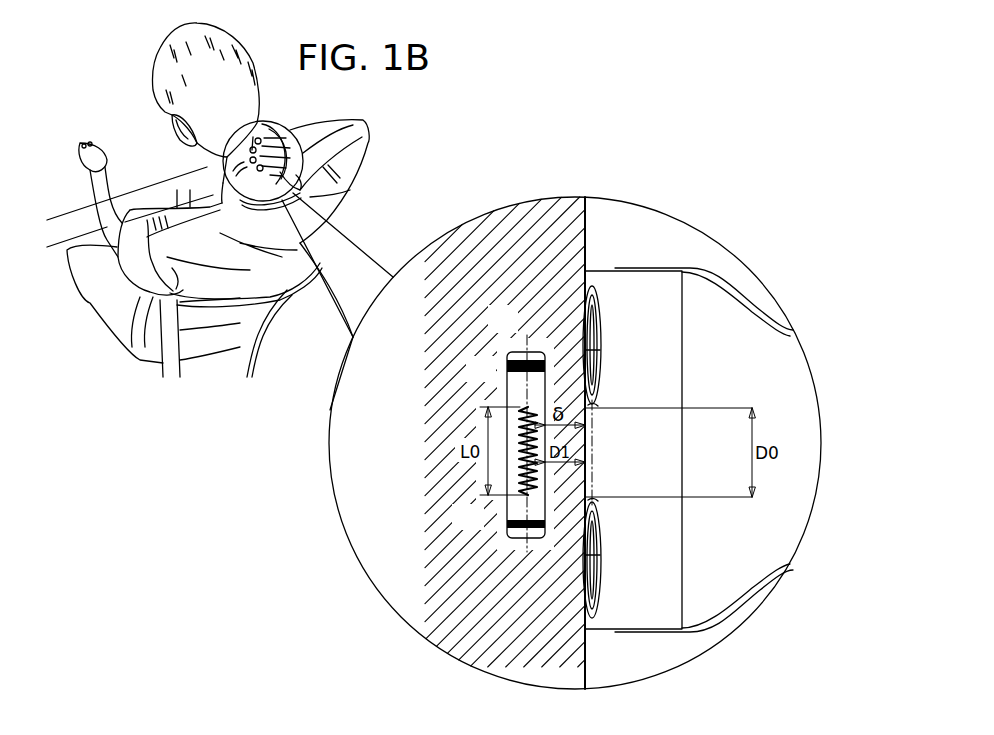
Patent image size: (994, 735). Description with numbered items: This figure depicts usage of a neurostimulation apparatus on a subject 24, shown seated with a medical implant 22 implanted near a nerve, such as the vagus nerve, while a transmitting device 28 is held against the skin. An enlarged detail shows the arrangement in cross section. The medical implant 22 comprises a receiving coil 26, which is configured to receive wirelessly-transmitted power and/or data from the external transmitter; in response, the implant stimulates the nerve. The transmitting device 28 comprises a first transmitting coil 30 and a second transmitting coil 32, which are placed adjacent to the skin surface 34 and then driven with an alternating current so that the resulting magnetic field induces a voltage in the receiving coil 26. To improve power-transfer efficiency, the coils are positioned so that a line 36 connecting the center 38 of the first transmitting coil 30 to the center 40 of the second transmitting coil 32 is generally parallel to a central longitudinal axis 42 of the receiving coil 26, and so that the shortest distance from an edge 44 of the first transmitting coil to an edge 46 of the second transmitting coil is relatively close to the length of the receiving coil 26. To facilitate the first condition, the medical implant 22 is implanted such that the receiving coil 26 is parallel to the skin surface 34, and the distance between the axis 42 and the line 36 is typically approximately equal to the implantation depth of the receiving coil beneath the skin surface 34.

The medical implant 22 is at (213, 182).
The subject 24 is at (240, 45).
The receiving coil 26 is at (527, 494).
The transmitting device 28 is at (263, 125).
The first transmitting coil 30 is at (598, 300).
The second transmitting coil 32 is at (598, 615).
The skin surface 34 is at (587, 215).
The line 36 is at (596, 447).
The center 38 is at (594, 350).
The center 40 is at (594, 555).
The central longitudinal axis 42 is at (527, 352).
The edge 44 is at (596, 406).
The edge 46 is at (598, 499).